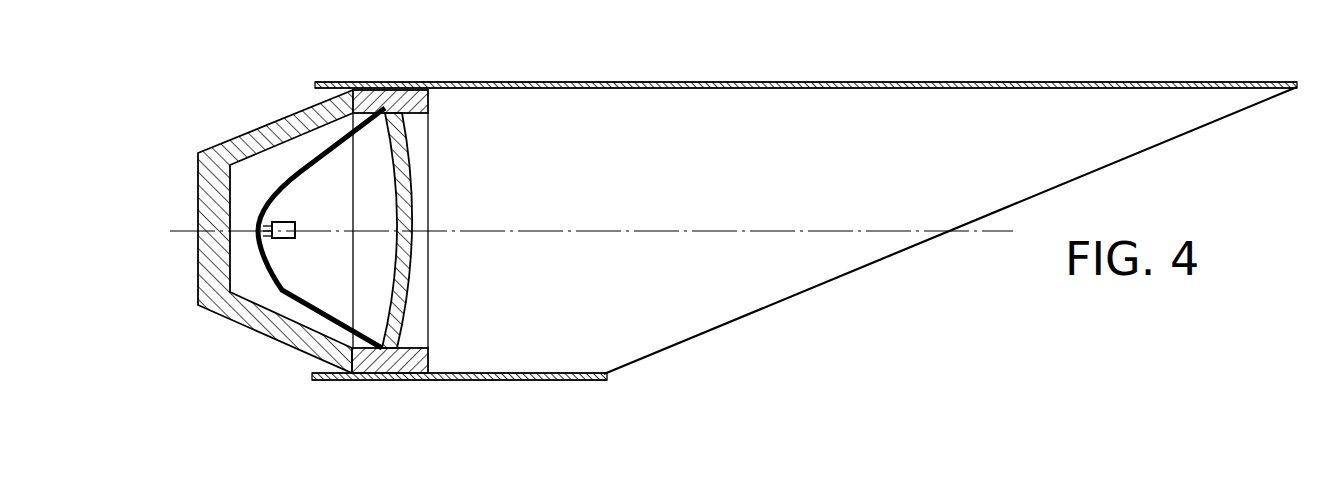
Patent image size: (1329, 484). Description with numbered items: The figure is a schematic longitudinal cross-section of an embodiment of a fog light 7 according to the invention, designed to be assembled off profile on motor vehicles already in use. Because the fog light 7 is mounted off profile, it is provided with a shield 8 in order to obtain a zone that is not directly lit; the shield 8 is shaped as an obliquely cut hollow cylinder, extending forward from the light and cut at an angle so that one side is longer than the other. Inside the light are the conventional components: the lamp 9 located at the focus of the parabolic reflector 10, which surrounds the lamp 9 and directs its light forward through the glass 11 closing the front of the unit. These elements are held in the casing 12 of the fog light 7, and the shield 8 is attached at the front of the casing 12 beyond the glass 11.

The fog light 7 is at (280, 209).
The shield 8 is at (470, 380).
The lamp 9 is at (283, 240).
The parabolic reflector 10 is at (310, 300).
The glass 11 is at (407, 190).
The casing 12 is at (208, 155).